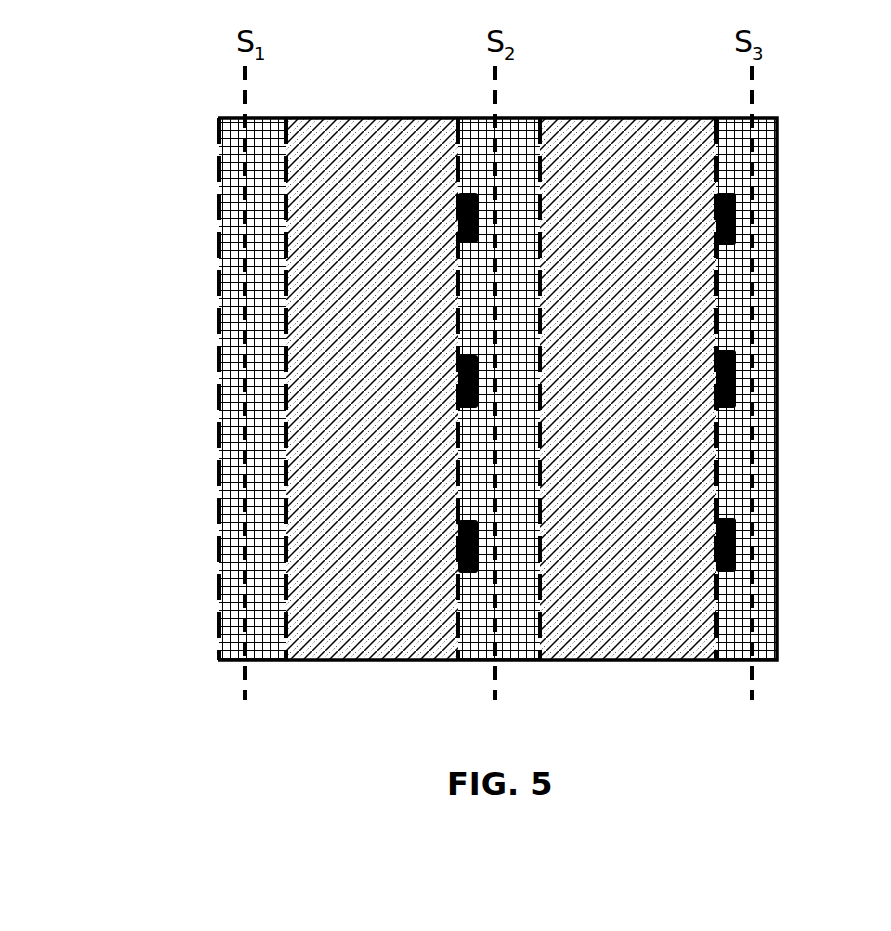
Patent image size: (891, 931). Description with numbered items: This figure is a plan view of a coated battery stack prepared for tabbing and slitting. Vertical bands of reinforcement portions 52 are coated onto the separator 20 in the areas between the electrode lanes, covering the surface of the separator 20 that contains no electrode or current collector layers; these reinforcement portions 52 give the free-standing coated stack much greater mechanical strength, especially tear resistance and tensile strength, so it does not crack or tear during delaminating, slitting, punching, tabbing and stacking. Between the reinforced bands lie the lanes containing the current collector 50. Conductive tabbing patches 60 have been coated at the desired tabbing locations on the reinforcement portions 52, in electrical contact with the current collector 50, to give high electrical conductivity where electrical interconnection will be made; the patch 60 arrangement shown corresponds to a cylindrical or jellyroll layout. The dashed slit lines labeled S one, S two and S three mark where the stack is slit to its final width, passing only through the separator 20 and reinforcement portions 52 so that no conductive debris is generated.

The separator 20 is at (502, 433).
The current collector 50 is at (352, 634).
The reinforcement portion 52 is at (248, 457).
The conductive tabbing patch 60 is at (736, 380).